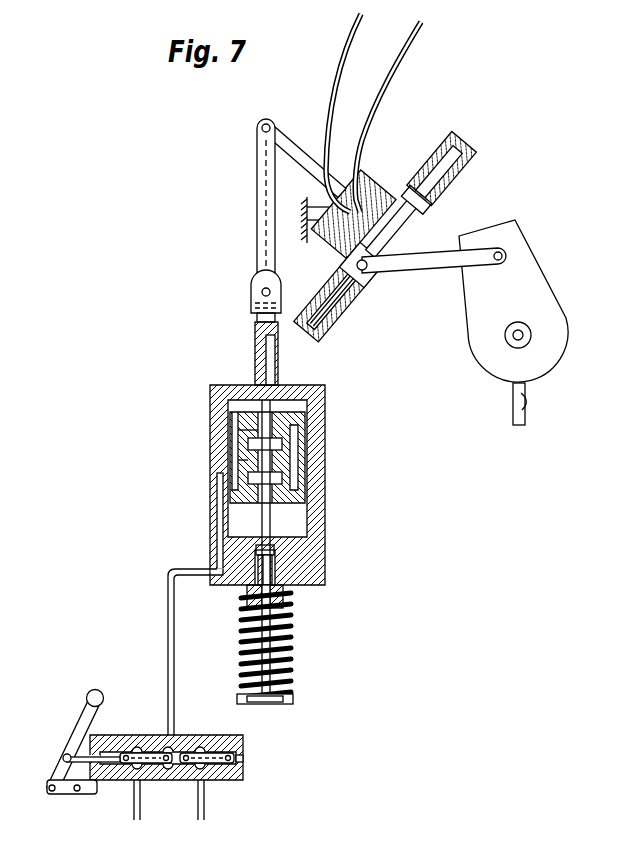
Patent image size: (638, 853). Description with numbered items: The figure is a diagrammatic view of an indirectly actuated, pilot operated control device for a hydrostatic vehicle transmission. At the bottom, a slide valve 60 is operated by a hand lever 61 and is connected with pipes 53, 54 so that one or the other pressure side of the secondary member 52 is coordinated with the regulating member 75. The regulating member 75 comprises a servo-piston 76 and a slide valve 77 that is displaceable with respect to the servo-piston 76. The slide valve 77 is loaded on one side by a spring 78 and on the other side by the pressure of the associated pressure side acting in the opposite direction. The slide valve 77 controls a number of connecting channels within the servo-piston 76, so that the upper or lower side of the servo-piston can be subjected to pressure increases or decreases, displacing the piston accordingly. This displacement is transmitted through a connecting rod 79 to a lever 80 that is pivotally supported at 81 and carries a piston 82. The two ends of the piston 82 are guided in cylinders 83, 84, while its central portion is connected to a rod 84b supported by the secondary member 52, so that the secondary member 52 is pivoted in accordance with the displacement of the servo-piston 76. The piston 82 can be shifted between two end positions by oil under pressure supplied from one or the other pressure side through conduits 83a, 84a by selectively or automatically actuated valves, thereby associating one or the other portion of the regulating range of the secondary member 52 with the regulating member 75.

The secondary member 52 is at (544, 272).
The pipe 53 is at (132, 808).
The pipe 54 is at (200, 808).
The slide valve 60 is at (236, 781).
The lever 61 is at (83, 716).
The regulating member 75 is at (217, 431).
The servo-piston 76 is at (267, 457).
The slide valve 77 is at (262, 524).
The spring 78 is at (294, 624).
The connecting rod 79 is at (257, 197).
The lever 80 is at (294, 150).
The pivot support 81 is at (362, 195).
The piston 82 is at (404, 223).
The cylinder 83 is at (330, 329).
The conduit 83a is at (346, 52).
The cylinder 84 is at (433, 155).
The conduit 84a is at (394, 74).
The rod 84b is at (436, 268).